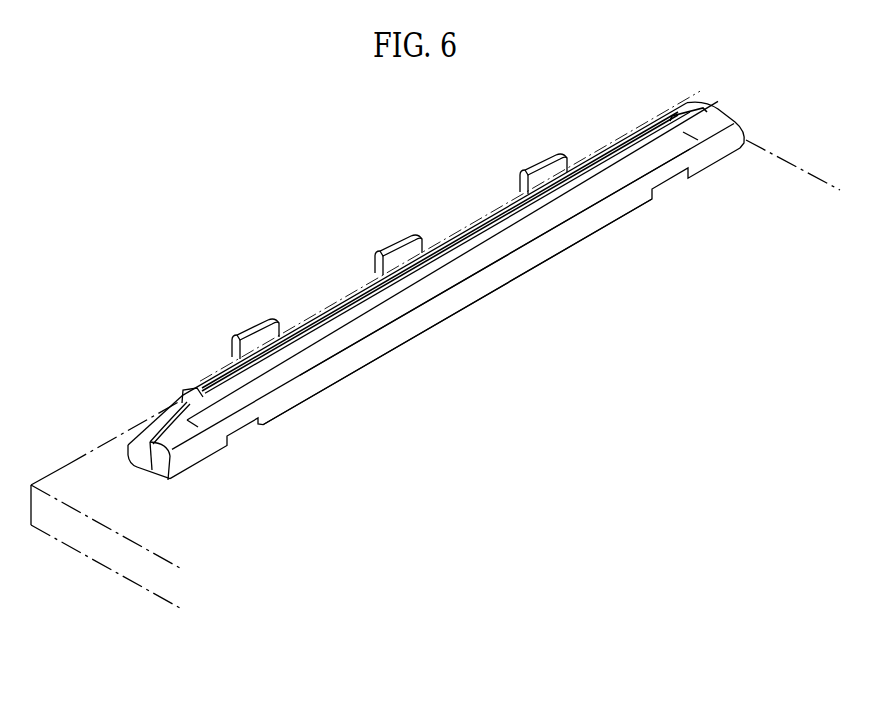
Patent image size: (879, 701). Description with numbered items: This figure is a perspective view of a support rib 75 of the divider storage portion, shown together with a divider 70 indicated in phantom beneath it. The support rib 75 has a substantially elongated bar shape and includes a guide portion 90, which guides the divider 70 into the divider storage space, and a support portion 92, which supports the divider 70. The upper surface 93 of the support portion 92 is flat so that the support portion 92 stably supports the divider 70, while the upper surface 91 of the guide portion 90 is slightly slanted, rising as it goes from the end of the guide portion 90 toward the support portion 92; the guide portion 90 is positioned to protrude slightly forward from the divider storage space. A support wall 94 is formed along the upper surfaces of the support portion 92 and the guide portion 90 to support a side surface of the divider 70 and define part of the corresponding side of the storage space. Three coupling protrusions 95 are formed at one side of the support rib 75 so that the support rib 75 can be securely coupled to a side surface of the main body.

The divider 70 is at (60, 470).
The support rib 75 is at (380, 95).
The guide portion 90 is at (222, 466).
The upper surface of the guide portion 91 is at (157, 474).
The support portion 92 is at (441, 341).
The upper surface of the support portion 93 is at (449, 276).
The support wall 94 is at (203, 390).
The coupling protrusions 95 is at (262, 318).